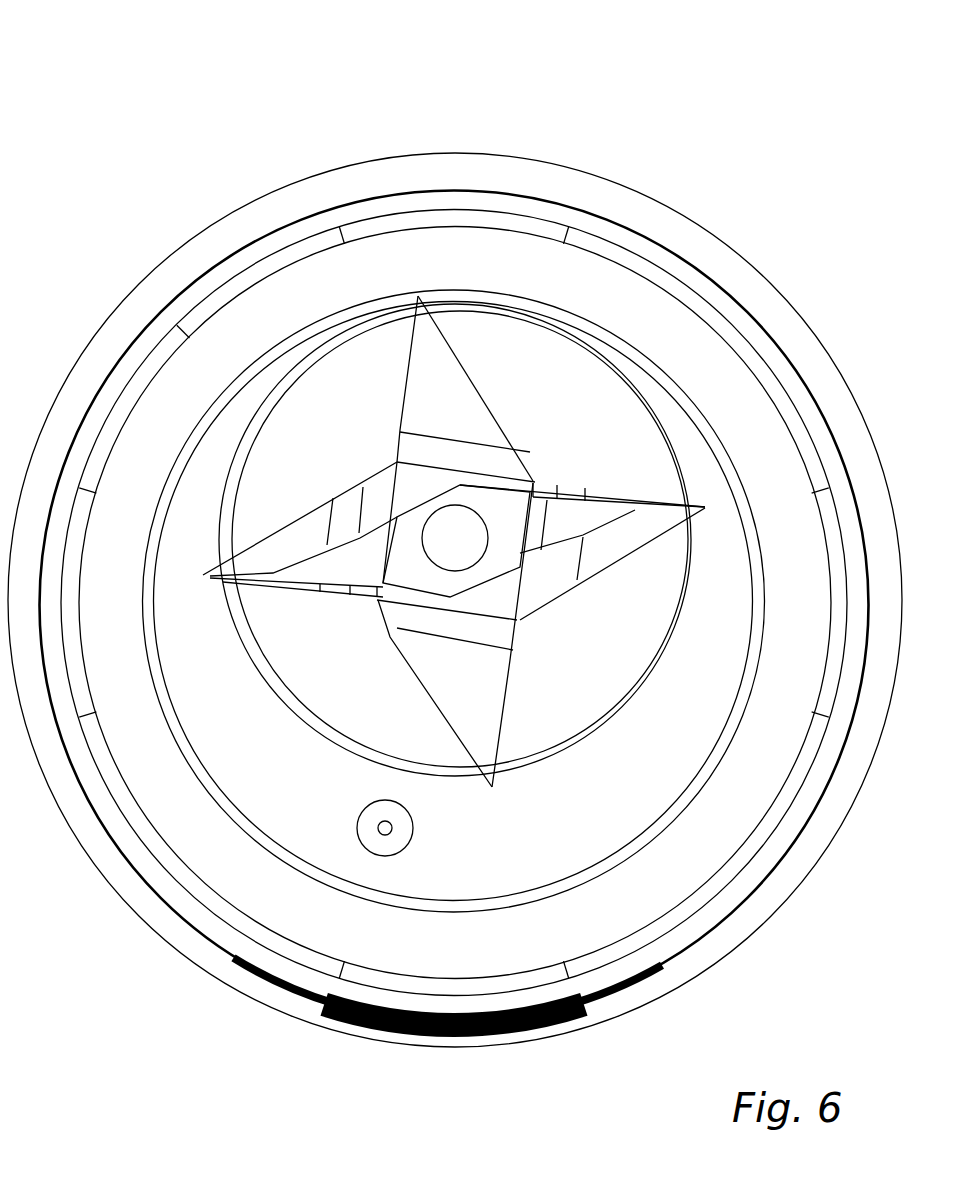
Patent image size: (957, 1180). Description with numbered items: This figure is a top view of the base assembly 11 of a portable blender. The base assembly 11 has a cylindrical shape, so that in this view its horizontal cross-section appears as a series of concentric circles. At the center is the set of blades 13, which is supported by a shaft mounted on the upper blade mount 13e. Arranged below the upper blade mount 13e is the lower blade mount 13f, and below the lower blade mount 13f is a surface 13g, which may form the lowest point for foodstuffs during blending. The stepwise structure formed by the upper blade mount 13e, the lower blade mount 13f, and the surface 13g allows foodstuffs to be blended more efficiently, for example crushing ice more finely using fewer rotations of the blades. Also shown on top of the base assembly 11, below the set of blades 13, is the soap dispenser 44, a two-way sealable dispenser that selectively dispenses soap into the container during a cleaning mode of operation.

The base assembly 11 is at (748, 84).
The set of blades 13 is at (477, 387).
The upper blade mount 13e is at (455, 540).
The lower blade mount 13f is at (454, 601).
The surface 13g is at (455, 603).
The soap dispenser 44 is at (482, 828).